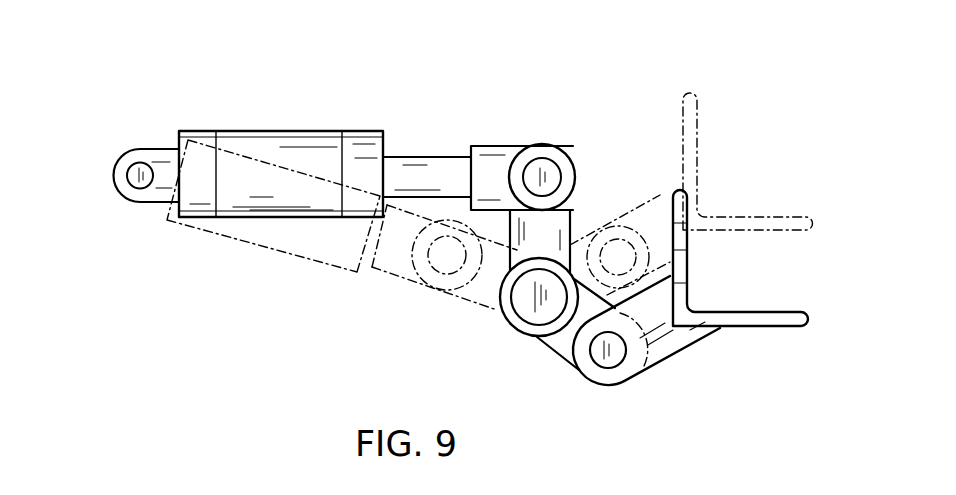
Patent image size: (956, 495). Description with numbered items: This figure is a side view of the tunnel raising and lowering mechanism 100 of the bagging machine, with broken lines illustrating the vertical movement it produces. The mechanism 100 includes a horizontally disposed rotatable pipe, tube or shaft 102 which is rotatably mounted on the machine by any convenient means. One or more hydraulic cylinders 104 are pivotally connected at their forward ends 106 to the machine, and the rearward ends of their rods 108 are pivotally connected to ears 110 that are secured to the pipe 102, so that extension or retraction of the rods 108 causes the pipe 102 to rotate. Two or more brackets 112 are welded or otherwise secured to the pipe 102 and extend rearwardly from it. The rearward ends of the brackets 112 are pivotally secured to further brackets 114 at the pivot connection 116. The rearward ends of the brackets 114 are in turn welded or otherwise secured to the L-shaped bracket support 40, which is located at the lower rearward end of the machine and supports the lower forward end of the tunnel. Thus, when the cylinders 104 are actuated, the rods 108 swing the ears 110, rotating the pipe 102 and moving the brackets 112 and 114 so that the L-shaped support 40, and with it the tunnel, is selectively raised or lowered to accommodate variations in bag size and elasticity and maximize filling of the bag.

The mechanism 100 is at (428, 130).
The rotatable pipe, tube or shaft 102 is at (513, 323).
The hydraulic cylinder 104 is at (294, 128).
The forward end 106 is at (137, 148).
The rod 108 is at (440, 157).
The ear 110 is at (547, 227).
The bracket 112 is at (557, 350).
The bracket 114 is at (668, 335).
The pivot connection 116 is at (622, 360).
The L-shaped bracket support 40 is at (747, 217).